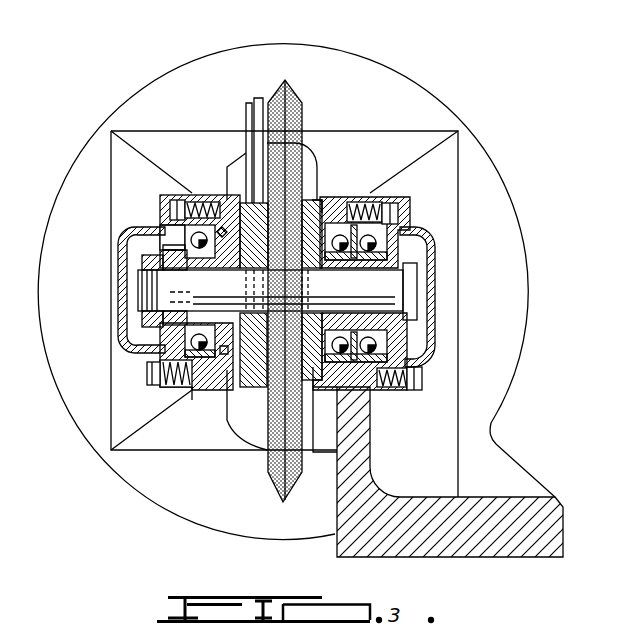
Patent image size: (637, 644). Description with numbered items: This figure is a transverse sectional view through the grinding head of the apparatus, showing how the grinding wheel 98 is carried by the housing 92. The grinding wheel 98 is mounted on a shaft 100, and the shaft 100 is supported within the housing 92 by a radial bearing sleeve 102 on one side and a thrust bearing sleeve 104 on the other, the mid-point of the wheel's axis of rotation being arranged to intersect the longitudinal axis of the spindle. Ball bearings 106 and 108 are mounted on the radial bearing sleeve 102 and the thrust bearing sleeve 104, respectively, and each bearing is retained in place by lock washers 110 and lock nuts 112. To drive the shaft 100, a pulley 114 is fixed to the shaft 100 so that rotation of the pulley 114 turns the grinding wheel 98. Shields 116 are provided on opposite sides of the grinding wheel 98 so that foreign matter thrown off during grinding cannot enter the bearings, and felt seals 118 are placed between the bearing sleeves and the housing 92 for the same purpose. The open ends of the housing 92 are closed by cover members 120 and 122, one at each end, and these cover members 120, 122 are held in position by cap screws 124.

The housing 92 is at (331, 198).
The grinding wheel 98 is at (291, 101).
The shaft 100 is at (392, 288).
The radial bearing sleeve 102 is at (197, 272).
The thrust bearing sleeve 104 is at (302, 284).
The ball bearing 106 is at (197, 216).
The ball bearing 108 is at (375, 199).
The lock washer 110 is at (187, 230).
The lock nut 112 is at (167, 249).
The pulley 114 is at (222, 384).
The shield 116 is at (313, 380).
The felt seal 118 is at (226, 348).
The cover member 120 is at (120, 282).
The cover member 122 is at (422, 239).
The cap screw 124 is at (420, 378).